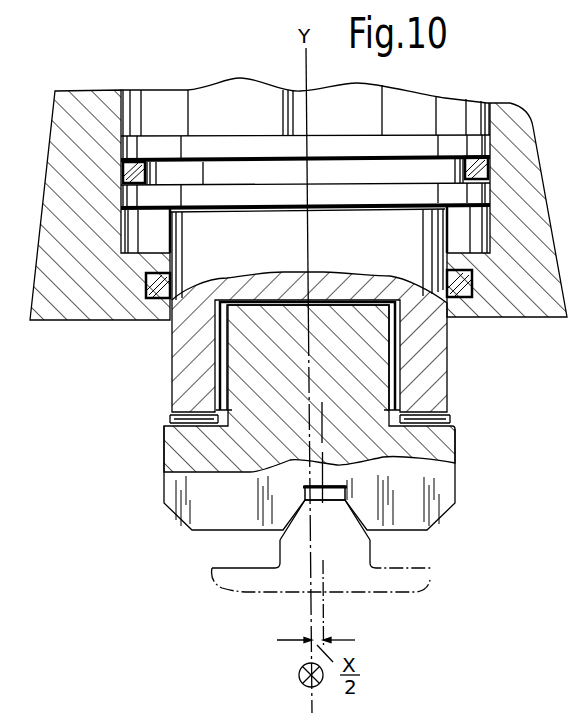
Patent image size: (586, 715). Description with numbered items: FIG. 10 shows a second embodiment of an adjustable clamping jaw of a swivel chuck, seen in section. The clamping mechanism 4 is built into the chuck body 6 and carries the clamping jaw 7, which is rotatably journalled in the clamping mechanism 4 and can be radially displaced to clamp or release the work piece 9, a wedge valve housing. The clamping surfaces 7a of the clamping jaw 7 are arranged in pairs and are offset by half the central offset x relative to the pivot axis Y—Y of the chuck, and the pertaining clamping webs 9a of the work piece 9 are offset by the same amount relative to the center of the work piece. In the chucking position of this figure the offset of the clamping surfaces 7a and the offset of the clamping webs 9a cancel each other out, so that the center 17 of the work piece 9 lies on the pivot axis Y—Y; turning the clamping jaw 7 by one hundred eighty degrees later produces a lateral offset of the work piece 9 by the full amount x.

The clamping mechanism 4 is at (185, 232).
The chuck body 6 is at (58, 157).
The clamping jaw 7 is at (232, 351).
The clamping surfaces 7a is at (349, 514).
The work piece 9 is at (436, 581).
The clamping webs 9a is at (350, 552).
The center of the work piece 17 is at (299, 673).